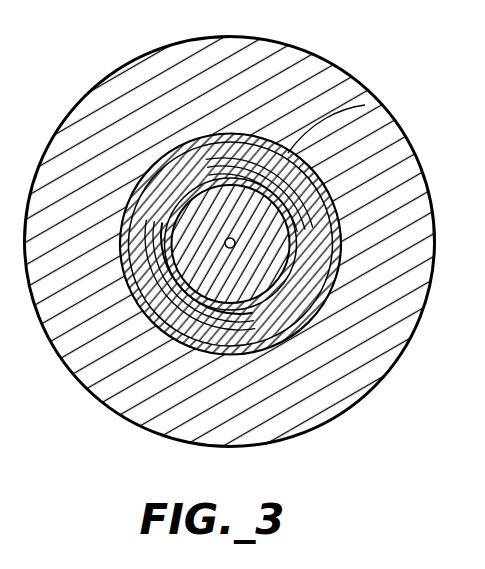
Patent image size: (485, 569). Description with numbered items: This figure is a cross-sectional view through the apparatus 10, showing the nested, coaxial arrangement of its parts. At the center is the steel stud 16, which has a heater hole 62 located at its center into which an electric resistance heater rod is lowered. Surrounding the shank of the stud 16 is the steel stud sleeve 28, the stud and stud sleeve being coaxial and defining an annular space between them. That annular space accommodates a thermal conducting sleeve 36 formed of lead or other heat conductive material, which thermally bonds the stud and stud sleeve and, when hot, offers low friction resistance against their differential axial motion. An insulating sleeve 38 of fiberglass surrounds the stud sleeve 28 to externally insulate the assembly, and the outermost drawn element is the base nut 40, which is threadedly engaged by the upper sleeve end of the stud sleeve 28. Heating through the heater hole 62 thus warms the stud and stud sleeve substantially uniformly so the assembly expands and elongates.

The apparatus 10 is at (159, 84).
The stud 16 is at (253, 208).
The stud sleeve 28 is at (160, 181).
The thermal conducting sleeve 36 is at (262, 300).
The insulating sleeve 38 is at (278, 141).
The base nut 40 is at (336, 361).
The heater hole 62 is at (230, 249).